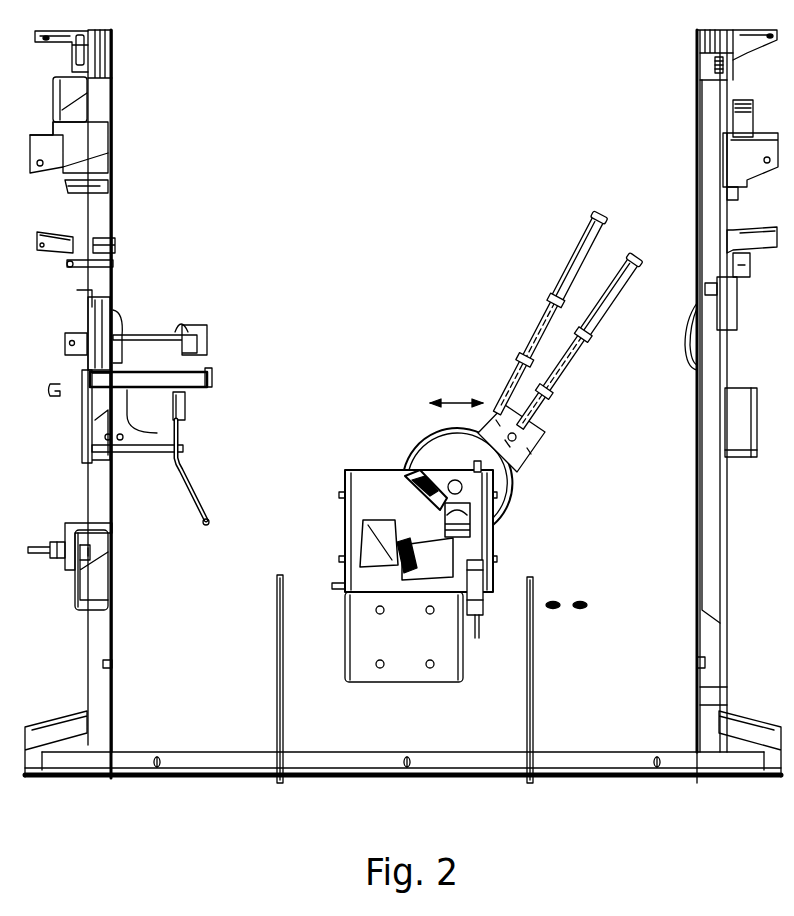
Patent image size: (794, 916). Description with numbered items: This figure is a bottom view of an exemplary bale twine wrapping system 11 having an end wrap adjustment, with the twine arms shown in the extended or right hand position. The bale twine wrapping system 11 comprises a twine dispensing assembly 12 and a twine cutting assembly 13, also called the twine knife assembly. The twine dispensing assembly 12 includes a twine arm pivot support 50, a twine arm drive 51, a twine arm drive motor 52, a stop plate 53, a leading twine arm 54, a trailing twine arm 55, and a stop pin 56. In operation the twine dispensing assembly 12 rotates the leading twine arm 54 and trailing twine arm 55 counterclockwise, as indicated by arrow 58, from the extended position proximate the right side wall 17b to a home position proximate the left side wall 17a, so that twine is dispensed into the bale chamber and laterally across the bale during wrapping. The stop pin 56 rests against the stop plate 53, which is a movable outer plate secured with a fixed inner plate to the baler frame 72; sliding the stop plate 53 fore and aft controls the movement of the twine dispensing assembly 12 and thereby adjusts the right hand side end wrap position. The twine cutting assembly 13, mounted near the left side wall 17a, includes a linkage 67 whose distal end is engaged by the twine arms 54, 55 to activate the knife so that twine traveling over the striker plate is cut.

The bale twine wrapping system 11 is at (355, 207).
The twine dispensing assembly 12 is at (407, 370).
The twine cutting assembly 13 is at (188, 307).
The left side wall 17a is at (111, 105).
The right side wall 17b is at (698, 108).
The twine arm pivot support 50 is at (387, 507).
The twine arm drive 51 is at (427, 433).
The twine arm drive motor 52 is at (433, 562).
The stop plate 53 is at (493, 480).
The leading twine arm 54 is at (575, 255).
The trailing twine arm 55 is at (613, 308).
The stop pin 56 is at (474, 468).
The arrow 58 is at (452, 400).
The linkage 67 is at (193, 490).
The baler frame 72 is at (490, 580).